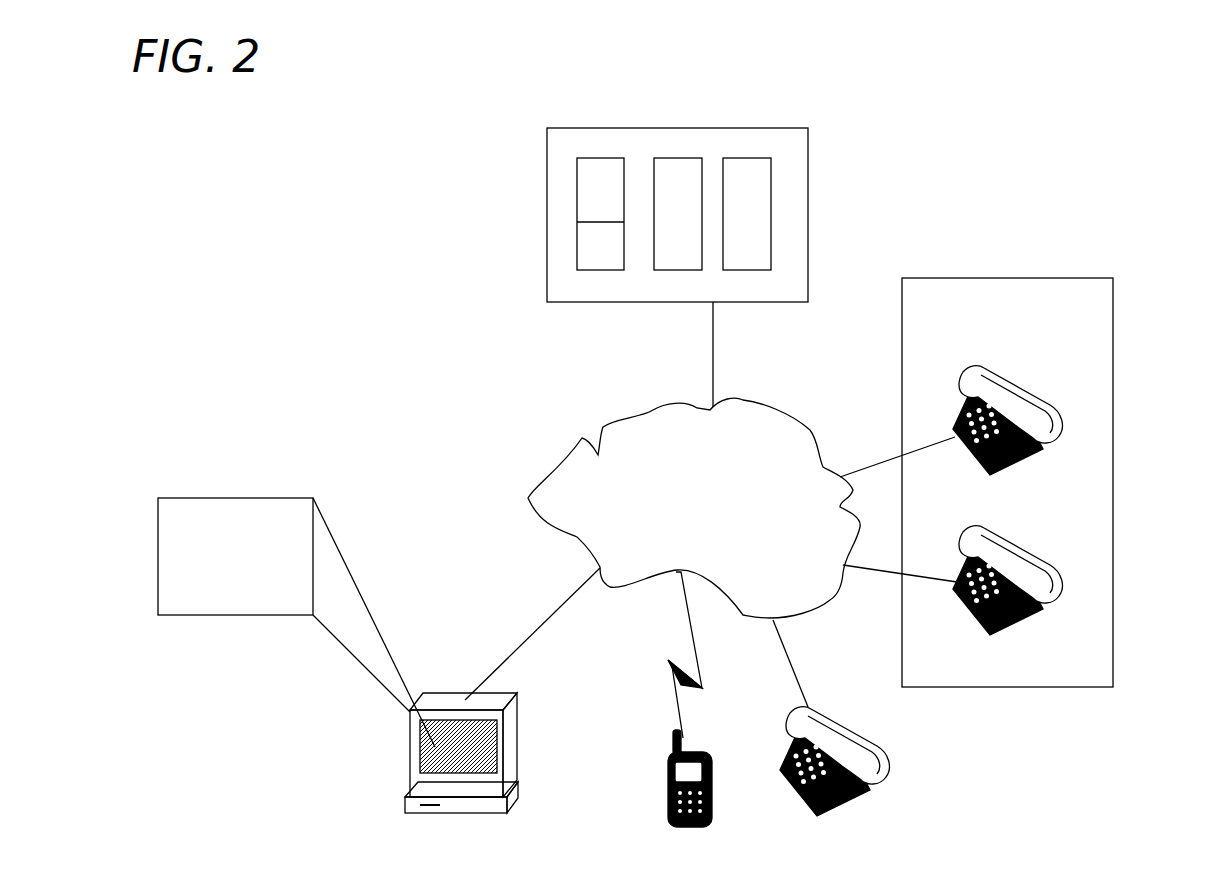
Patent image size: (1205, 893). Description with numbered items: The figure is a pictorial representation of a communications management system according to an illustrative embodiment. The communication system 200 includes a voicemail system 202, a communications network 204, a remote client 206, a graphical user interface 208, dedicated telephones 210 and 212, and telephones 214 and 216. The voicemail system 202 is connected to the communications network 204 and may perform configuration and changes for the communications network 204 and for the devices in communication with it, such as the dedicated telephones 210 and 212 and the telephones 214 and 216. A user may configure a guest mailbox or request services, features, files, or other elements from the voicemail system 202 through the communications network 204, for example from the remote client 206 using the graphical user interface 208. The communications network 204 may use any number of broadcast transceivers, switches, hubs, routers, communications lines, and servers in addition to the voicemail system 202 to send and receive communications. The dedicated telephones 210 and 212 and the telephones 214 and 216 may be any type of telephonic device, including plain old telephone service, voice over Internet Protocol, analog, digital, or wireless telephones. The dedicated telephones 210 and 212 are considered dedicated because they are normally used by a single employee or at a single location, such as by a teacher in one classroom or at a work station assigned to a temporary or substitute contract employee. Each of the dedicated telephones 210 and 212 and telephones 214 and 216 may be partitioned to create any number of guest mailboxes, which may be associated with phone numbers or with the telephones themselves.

The communication system 200 is at (259, 190).
The voicemail system 202 is at (793, 143).
The communications network 204 is at (675, 532).
The remote client 206 is at (405, 797).
The graphical user interface 208 is at (217, 609).
The dedicated telephone 210 is at (1050, 437).
The dedicated telephone 212 is at (1060, 592).
The telephone 214 is at (718, 813).
The telephone 216 is at (870, 793).